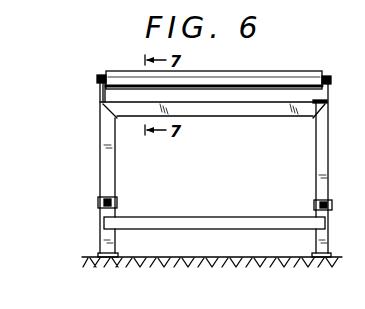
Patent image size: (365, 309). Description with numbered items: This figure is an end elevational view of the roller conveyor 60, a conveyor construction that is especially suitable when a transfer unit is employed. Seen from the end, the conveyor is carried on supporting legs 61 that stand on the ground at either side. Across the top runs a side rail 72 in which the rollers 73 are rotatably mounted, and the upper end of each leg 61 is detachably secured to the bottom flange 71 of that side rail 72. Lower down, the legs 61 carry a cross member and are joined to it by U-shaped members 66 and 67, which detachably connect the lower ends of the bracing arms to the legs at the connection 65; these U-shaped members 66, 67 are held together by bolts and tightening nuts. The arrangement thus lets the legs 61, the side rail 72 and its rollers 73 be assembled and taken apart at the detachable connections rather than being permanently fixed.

The roller conveyor 60 is at (93, 76).
The supporting leg 61 is at (99, 122).
The detachable connection 65 is at (122, 201).
The U-shaped member 66 is at (98, 208).
The U-shaped member 67 is at (118, 211).
The bottom flange 71 is at (114, 100).
The side rail 72 is at (101, 92).
The roller 73 is at (296, 73).